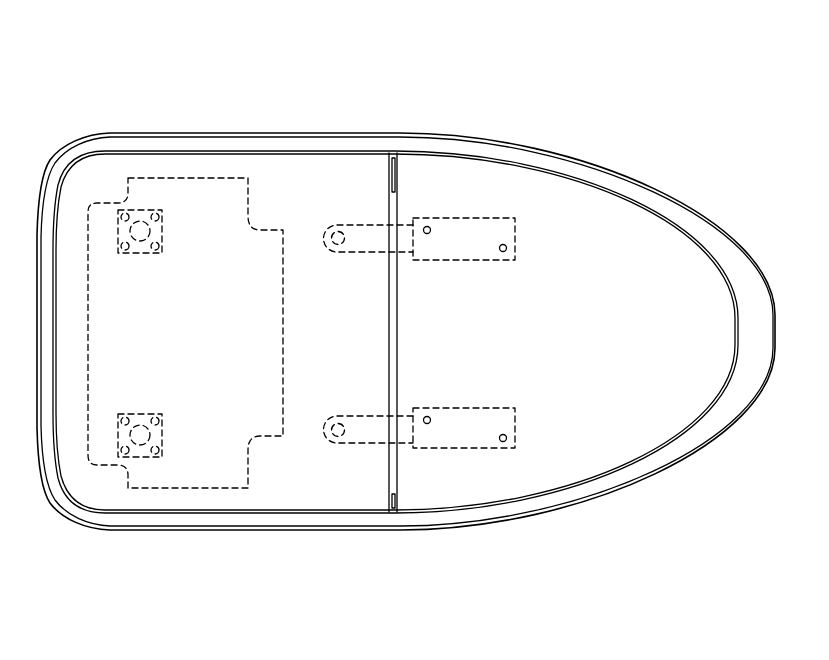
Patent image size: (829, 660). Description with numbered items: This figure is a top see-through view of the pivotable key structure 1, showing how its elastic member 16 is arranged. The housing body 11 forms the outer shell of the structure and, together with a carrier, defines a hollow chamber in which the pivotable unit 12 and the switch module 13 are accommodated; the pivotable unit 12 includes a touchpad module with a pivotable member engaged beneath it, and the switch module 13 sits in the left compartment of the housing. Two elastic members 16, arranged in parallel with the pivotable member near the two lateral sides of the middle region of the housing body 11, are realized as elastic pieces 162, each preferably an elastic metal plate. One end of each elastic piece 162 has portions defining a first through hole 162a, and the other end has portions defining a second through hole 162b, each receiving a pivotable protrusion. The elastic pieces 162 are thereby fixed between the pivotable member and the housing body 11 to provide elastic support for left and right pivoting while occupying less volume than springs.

The pivotable key structure 1 is at (141, 52).
The housing body 11 is at (707, 233).
The pivotable unit 12 is at (323, 182).
The switch module 13 is at (146, 253).
The elastic member 16 is at (565, 272).
The elastic piece 162 is at (463, 358).
The first through hole 162a is at (338, 438).
The second through hole 162b is at (505, 443).